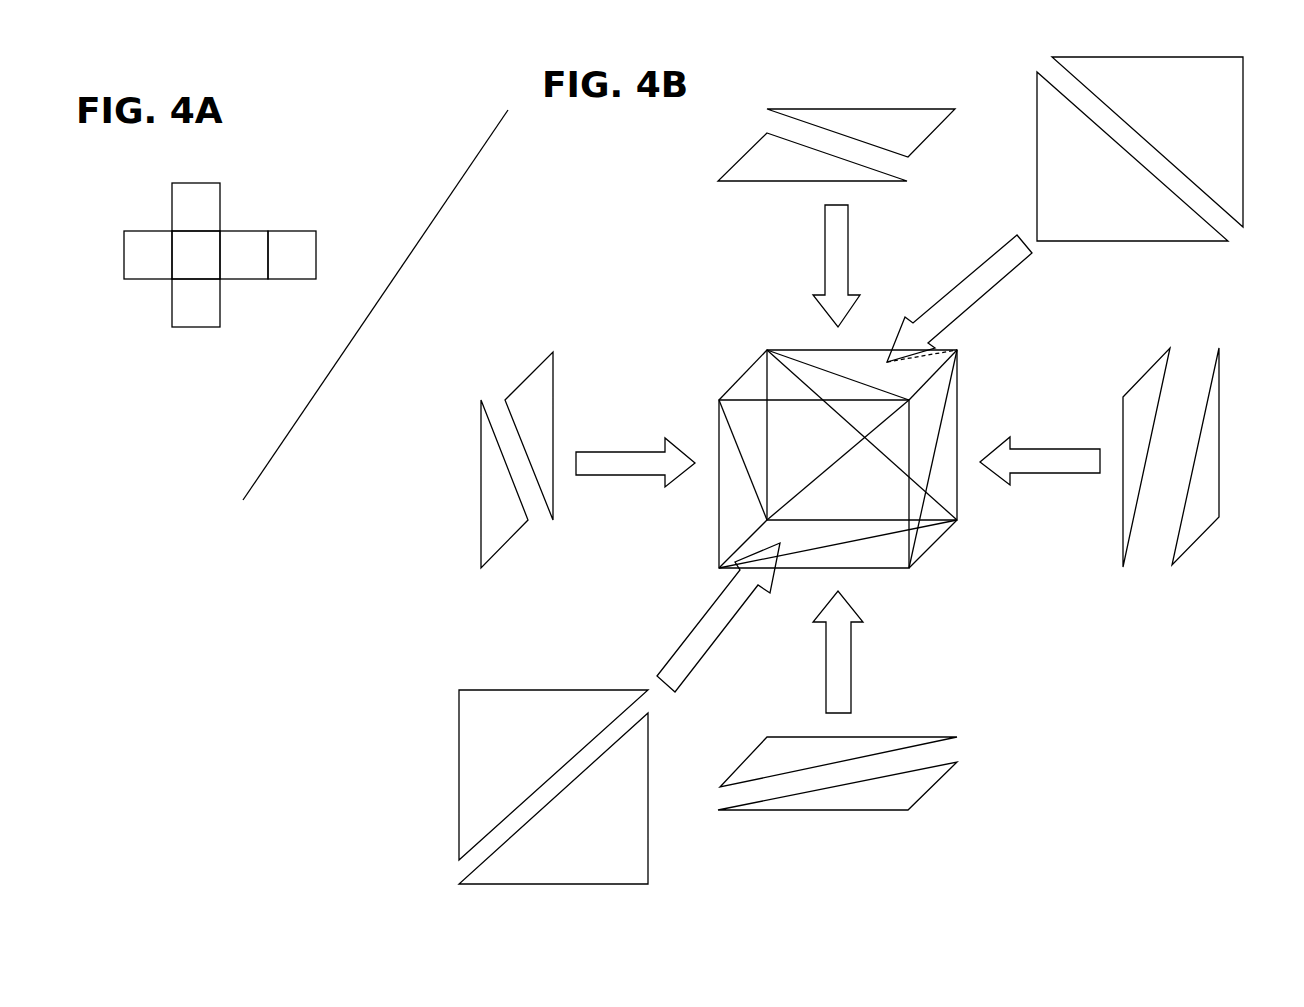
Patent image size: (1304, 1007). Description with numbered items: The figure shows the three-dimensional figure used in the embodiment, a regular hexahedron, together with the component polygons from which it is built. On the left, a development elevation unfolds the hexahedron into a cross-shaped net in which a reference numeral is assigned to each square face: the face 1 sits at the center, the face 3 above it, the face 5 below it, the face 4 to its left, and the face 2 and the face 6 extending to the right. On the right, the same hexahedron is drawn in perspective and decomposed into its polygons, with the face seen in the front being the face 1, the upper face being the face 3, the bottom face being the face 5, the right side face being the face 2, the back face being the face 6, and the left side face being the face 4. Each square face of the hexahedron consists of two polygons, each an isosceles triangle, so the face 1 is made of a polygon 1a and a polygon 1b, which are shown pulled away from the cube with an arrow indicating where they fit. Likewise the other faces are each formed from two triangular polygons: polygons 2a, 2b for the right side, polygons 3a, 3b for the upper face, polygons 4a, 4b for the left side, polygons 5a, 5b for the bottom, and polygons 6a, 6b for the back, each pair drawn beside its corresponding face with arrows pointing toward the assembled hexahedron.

In FIG. 4A, the face 1 is at (196, 255).
In FIG. 4A, the face 2 is at (244, 255).
In FIG. 4A, the face 3 is at (196, 207).
In FIG. 4A, the face 4 is at (148, 255).
In FIG. 4A, the face 5 is at (196, 303).
In FIG. 4A, the face 6 is at (292, 255).
In FIG. 4B, the polygon 1a is at (553, 775).
In FIG. 4B, the polygon 1b is at (553, 798).
In FIG. 4B, the polygon 2a is at (1129, 457).
In FIG. 4B, the polygon 2b is at (1216, 456).
In FIG. 4B, the polygon 3a is at (784, 157).
In FIG. 4B, the polygon 3b is at (861, 115).
In FIG. 4B, the polygon 4a is at (475, 484).
In FIG. 4B, the polygon 4b is at (548, 436).
In FIG. 4B, the polygon 5a is at (838, 744).
In FIG. 4B, the polygon 5b is at (837, 805).
In FIG. 4B, the polygon 6a is at (1147, 142).
In FIG. 4B, the polygon 6b is at (1132, 156).